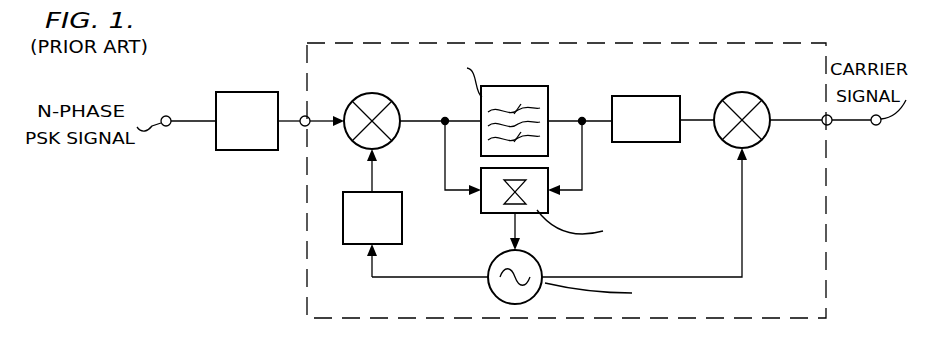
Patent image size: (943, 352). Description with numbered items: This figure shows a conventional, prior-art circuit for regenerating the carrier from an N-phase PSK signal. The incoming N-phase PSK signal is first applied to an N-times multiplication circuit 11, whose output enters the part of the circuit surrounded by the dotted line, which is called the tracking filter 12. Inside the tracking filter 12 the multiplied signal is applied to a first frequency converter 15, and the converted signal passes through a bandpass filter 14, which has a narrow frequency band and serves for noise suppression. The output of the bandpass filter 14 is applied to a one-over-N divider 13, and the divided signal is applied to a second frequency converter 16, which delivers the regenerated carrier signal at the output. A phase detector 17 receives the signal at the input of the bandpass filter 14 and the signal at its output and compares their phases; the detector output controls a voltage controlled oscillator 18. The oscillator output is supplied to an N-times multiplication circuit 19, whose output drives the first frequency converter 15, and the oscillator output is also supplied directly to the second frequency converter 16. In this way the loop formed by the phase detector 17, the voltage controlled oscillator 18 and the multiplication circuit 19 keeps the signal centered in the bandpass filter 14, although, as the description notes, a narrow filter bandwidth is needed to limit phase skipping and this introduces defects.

The N-times multiplication circuit 11 is at (262, 94).
The tracking filter 12 is at (372, 52).
The 1/N divider 13 is at (660, 96).
The bandpass filter 14 is at (537, 86).
The frequency converter 15 is at (386, 96).
The frequency converter 16 is at (756, 96).
The phase detector 17 is at (548, 200).
The voltage controlled oscillator 18 is at (535, 265).
The N-times multiplication circuit 19 is at (403, 241).